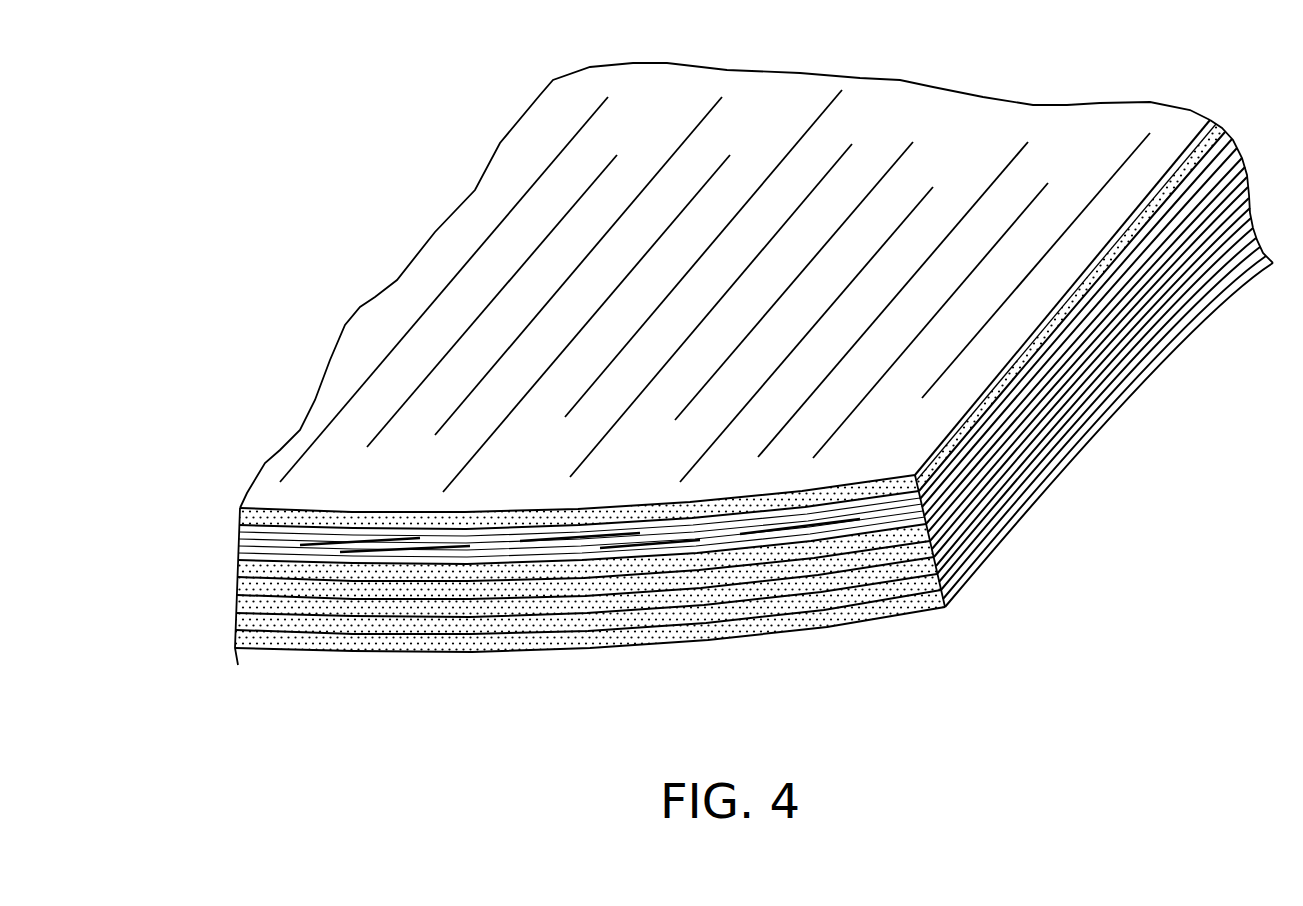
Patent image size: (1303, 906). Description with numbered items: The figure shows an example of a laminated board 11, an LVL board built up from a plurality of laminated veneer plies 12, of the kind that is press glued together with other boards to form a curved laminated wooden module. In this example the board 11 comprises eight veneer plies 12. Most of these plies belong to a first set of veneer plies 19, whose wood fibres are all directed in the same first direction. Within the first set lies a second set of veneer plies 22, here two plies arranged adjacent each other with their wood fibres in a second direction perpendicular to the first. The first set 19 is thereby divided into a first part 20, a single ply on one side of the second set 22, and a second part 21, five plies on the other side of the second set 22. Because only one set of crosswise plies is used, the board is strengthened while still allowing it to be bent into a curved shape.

The laminated board 11 is at (1118, 64).
The veneer plies 12 is at (1020, 405).
The first set of veneer plies 19 is at (504, 559).
The first part of the first set of veneer plies 20 is at (238, 513).
The second part of the first set of veneer plies 21 is at (232, 647).
The second set of veneer plies 22 is at (232, 561).